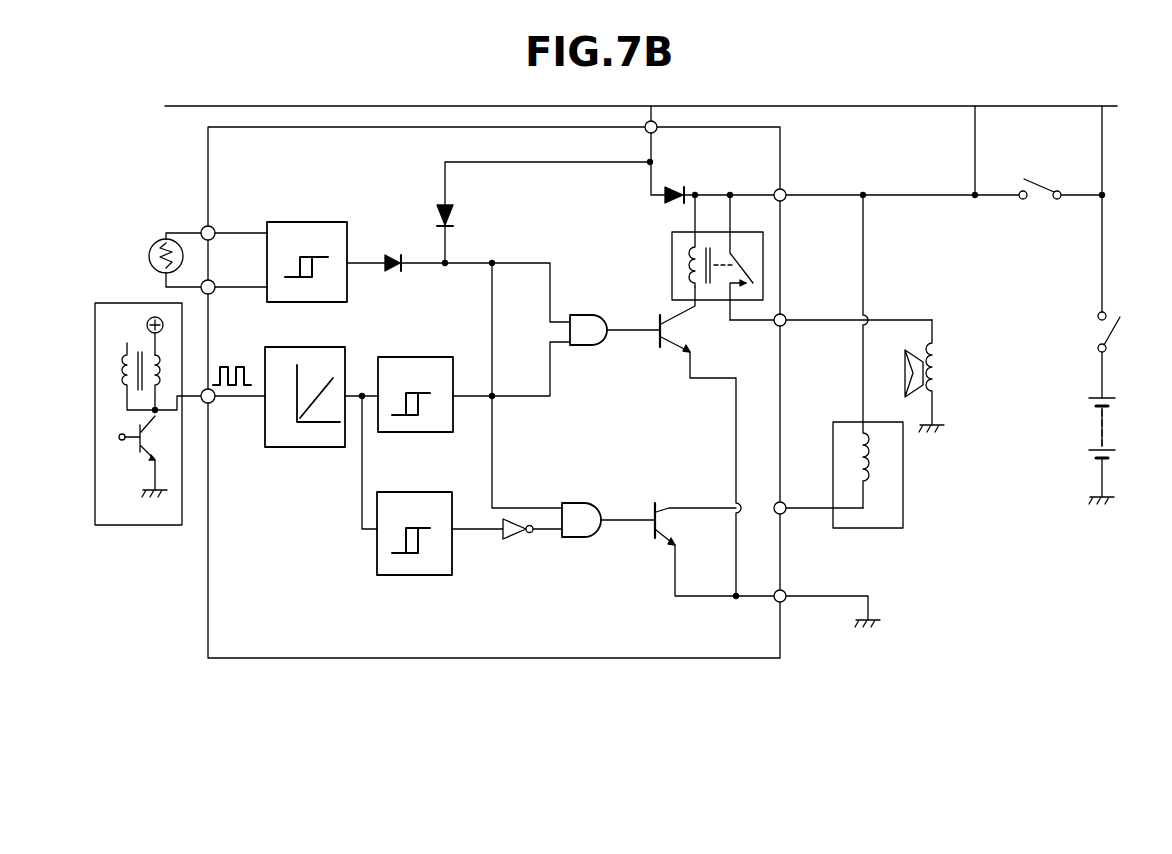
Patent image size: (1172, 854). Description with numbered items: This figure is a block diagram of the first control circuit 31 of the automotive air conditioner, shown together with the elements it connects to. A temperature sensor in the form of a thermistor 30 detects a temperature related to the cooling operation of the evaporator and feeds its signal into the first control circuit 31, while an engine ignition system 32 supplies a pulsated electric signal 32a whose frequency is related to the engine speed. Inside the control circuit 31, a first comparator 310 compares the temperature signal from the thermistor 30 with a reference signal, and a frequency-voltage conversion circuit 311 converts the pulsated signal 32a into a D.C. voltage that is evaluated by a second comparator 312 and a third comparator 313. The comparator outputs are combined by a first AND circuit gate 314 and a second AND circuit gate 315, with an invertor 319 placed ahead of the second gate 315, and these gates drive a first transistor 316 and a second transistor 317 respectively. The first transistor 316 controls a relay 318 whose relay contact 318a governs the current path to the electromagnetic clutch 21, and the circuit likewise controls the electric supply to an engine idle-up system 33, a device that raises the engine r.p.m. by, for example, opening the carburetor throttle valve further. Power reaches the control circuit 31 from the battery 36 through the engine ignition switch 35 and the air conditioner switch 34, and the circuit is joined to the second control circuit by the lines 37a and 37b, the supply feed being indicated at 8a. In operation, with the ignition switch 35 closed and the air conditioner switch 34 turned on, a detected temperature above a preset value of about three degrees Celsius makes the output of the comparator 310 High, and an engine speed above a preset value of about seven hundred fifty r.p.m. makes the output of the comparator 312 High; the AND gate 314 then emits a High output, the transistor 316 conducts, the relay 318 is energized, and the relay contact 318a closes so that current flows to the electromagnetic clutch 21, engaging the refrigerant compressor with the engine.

The power supply line 8a is at (1105, 152).
The electromagnetic clutch 21 is at (940, 372).
The thermistor 30 is at (152, 246).
The first control circuit 31 is at (782, 160).
The engine ignition system 32 is at (124, 528).
The pulsated electric signal 32a is at (230, 364).
The engine idle-up system 33 is at (841, 530).
The air conditioner switch 34 is at (1040, 182).
The engine ignition switch 35 is at (1094, 336).
The battery 36 is at (1092, 424).
The line 37a is at (661, 125).
The line 37b is at (978, 118).
The first comparator 310 is at (314, 222).
The frequency-voltage conversion circuit 311 is at (317, 330).
The second comparator 312 is at (430, 357).
The third comparator 313 is at (418, 575).
The first AND circuit gate 314 is at (584, 346).
The second AND circuit gate 315 is at (579, 538).
The first transistor 316 is at (674, 350).
The second transistor 317 is at (674, 547).
The relay 318 is at (762, 257).
The relay contact 318a is at (748, 272).
The invertor 319 is at (515, 540).